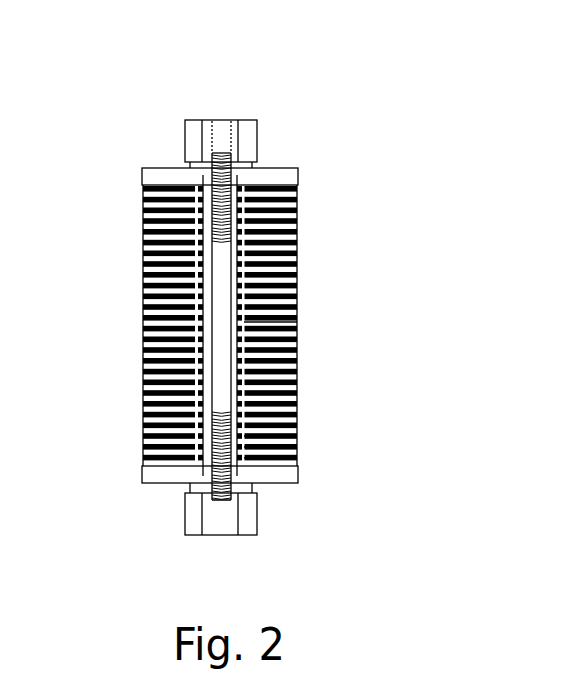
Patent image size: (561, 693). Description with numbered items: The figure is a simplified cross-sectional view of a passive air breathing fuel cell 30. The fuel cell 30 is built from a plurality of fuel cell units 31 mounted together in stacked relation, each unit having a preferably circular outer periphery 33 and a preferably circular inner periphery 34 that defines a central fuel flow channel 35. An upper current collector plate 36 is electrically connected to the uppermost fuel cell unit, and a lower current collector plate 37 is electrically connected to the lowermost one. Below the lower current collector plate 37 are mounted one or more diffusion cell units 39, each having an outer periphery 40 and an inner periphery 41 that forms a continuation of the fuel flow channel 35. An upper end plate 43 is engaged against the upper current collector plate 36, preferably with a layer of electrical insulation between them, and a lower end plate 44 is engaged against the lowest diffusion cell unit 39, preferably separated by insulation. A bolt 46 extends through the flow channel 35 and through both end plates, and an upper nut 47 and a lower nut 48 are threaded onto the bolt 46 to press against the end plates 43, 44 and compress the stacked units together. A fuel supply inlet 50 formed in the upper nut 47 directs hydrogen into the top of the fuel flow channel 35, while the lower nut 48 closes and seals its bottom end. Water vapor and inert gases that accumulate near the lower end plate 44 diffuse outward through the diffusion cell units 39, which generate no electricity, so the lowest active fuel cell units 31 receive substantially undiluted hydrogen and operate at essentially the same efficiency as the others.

The passive air breathing fuel cell 30 is at (333, 197).
The fuel cell units 31 is at (293, 240).
The outer periphery 33 is at (295, 323).
The inner periphery 34 is at (296, 385).
The fuel flow channel 35 is at (208, 327).
The upper current collector plate 36 is at (140, 188).
The lower current collector plate 37 is at (145, 433).
The diffusion cell units 39 is at (293, 463).
The outer periphery 40 is at (145, 450).
The inner periphery 41 is at (230, 472).
The upper end plate 43 is at (287, 167).
The lower end plate 44 is at (232, 477).
The bolt 46 is at (222, 295).
The upper nut 47 is at (246, 128).
The lower nut 48 is at (190, 527).
The fuel supply inlet 50 is at (202, 122).